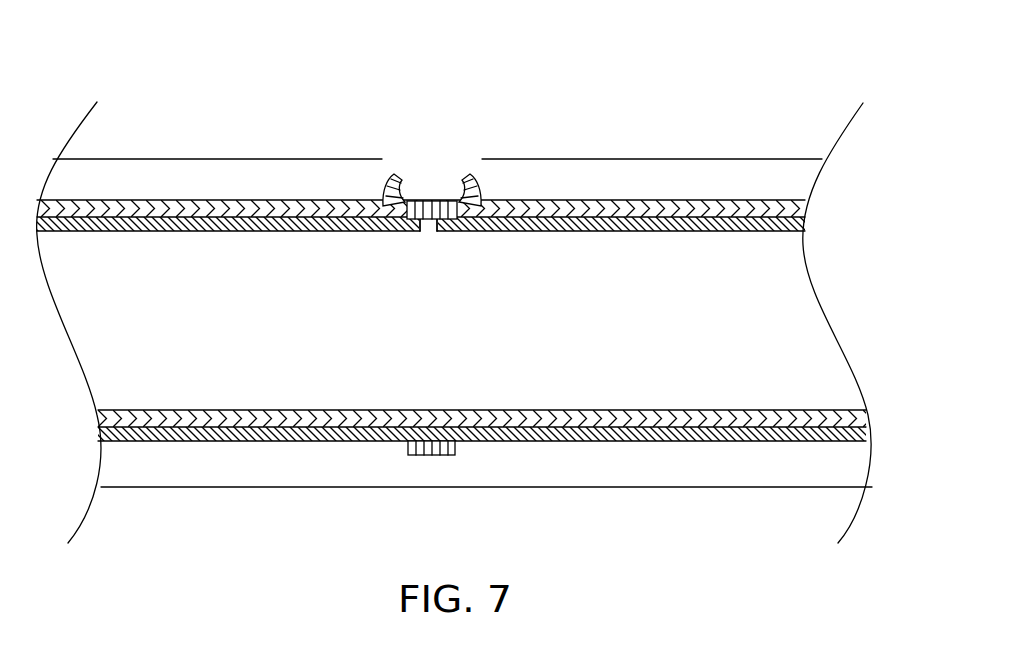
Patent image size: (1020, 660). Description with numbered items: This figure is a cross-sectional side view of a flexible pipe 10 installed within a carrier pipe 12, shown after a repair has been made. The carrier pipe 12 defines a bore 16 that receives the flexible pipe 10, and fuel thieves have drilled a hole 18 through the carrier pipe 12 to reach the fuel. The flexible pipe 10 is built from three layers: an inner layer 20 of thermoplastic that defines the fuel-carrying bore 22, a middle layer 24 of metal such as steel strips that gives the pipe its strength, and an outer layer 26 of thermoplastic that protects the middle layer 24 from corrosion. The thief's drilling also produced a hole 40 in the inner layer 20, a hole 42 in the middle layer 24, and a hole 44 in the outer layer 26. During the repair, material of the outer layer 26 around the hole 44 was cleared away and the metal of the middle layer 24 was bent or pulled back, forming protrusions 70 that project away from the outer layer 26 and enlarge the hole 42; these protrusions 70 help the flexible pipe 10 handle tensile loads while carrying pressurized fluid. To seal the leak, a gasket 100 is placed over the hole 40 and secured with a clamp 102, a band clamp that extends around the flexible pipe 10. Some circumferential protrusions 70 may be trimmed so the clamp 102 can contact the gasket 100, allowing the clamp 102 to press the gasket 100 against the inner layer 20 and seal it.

The flexible pipe 10 is at (857, 346).
The carrier pipe 12 is at (192, 159).
The bore 16 is at (106, 193).
The hole 18 is at (451, 304).
The inner layer 20 is at (605, 225).
The bore 22 is at (193, 323).
The middle layer 24 is at (673, 222).
The outer layer 26 is at (722, 203).
The hole 40 is at (433, 230).
The hole 42 is at (466, 229).
The hole 44 is at (478, 195).
The protrusions 70 is at (386, 184).
The gasket 100 is at (422, 229).
The clamp 102 is at (430, 200).